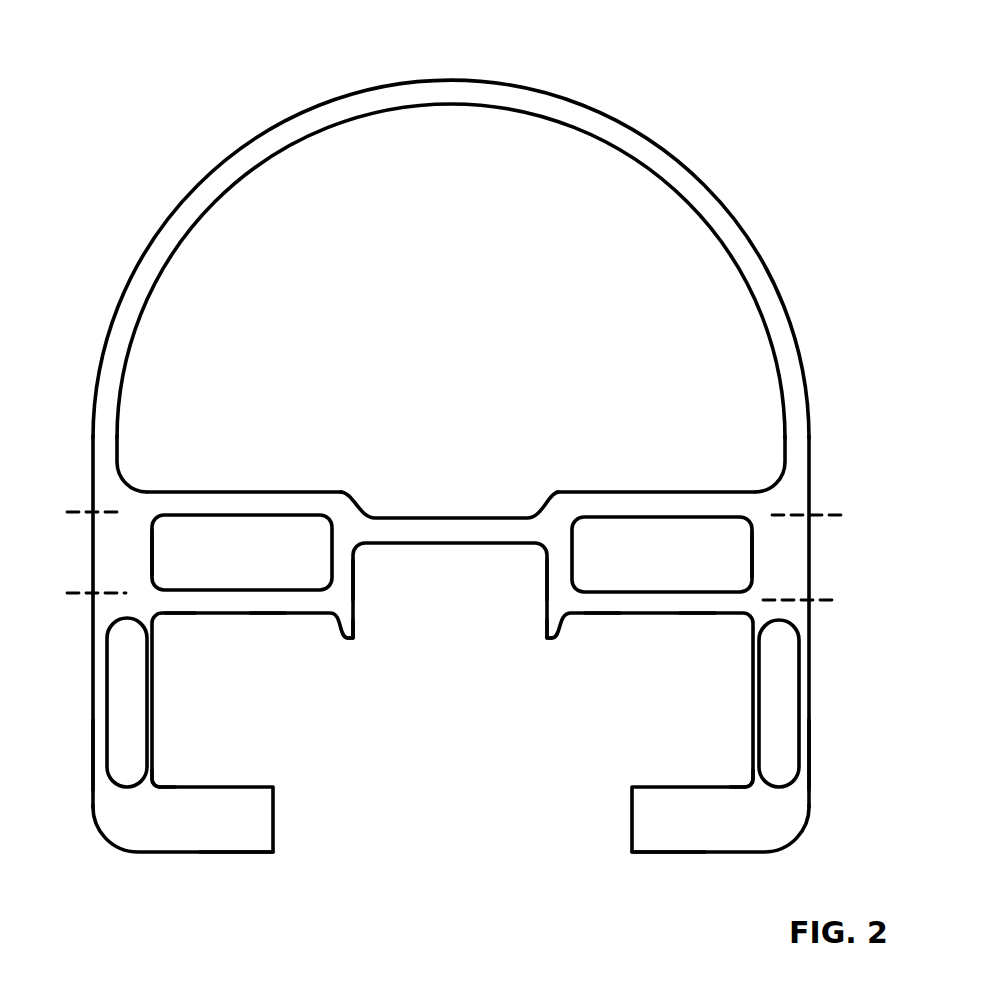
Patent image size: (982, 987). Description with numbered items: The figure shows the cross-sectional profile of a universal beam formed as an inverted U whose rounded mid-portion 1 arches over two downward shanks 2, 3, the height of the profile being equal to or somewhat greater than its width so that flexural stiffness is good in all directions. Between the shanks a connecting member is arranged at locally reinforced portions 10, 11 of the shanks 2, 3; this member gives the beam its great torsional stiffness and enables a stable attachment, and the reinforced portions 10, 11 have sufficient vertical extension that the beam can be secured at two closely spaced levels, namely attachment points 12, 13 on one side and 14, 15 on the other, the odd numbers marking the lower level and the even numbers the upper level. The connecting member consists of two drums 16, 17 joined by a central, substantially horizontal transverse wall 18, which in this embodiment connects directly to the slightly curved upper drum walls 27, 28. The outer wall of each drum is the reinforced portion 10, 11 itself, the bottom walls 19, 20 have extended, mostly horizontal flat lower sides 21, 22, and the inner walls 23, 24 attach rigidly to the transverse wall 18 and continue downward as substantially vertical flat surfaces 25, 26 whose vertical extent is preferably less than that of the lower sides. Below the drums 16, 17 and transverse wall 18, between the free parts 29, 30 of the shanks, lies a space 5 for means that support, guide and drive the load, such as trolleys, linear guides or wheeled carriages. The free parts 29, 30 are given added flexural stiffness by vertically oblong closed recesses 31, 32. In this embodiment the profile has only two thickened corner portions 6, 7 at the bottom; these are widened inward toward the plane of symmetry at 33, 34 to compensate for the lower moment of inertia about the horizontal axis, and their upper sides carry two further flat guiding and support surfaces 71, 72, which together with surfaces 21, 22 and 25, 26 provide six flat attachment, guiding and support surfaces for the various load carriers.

The mid-portion 1 is at (420, 90).
The shank 2 is at (100, 695).
The shank 3 is at (803, 703).
The space 5 is at (452, 665).
The thickened corner portion 6 is at (118, 822).
The thickened corner portion 7 is at (783, 828).
The locally reinforced portion 10 is at (138, 537).
The locally reinforced portion 11 is at (773, 537).
The attachment level 12 is at (92, 499).
The attachment level 13 is at (95, 598).
The attachment level 14 is at (819, 500).
The attachment level 15 is at (815, 598).
The drum 16 is at (242, 552).
The drum 17 is at (662, 554).
The central transverse wall 18 is at (418, 535).
The bottom wall 19 is at (178, 607).
The bottom wall 20 is at (603, 605).
The lower side 21 is at (263, 617).
The lower side 22 is at (693, 620).
The inner wall 23 is at (345, 575).
The inner wall 24 is at (558, 562).
The vertical flat surface 25 is at (357, 615).
The vertical flat surface 26 is at (545, 612).
The upper drum wall 27 is at (168, 507).
The upper drum wall 28 is at (632, 510).
The free part of shank 29 is at (143, 747).
The free part of shank 30 is at (807, 722).
The closed recess 31 is at (127, 702).
The closed recess 32 is at (780, 703).
The widened corner portion 33 is at (232, 833).
The widened corner portion 34 is at (662, 832).
The guiding and support surface 71 is at (185, 783).
The guiding and support surface 72 is at (668, 783).